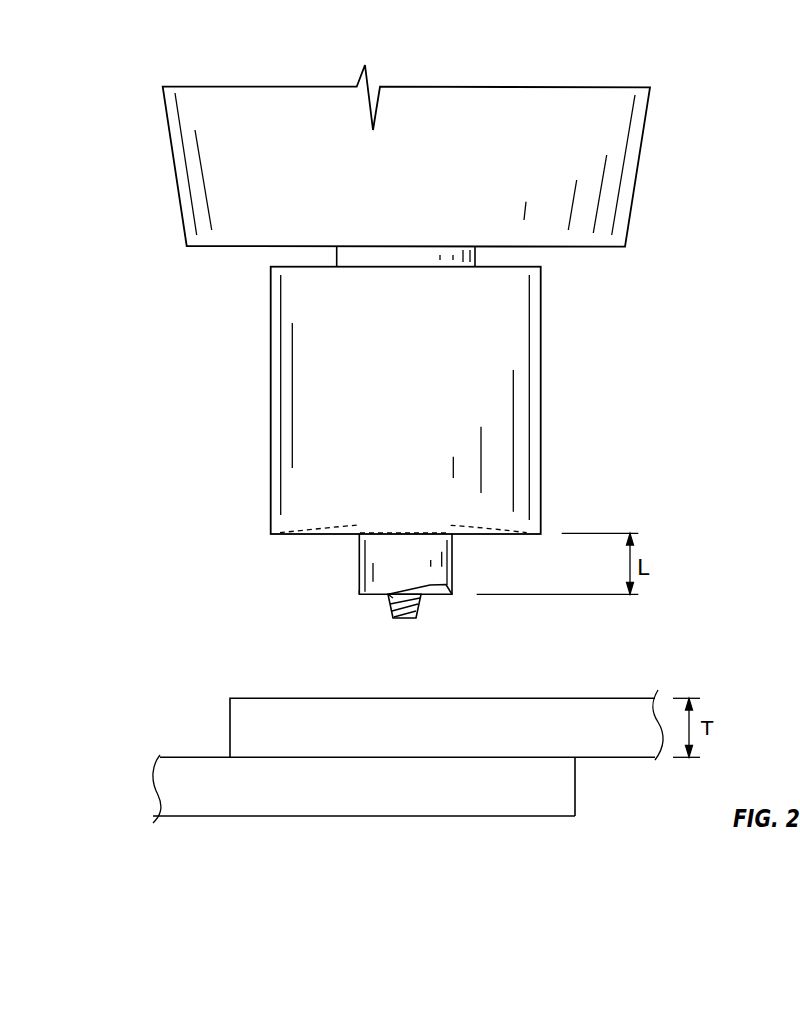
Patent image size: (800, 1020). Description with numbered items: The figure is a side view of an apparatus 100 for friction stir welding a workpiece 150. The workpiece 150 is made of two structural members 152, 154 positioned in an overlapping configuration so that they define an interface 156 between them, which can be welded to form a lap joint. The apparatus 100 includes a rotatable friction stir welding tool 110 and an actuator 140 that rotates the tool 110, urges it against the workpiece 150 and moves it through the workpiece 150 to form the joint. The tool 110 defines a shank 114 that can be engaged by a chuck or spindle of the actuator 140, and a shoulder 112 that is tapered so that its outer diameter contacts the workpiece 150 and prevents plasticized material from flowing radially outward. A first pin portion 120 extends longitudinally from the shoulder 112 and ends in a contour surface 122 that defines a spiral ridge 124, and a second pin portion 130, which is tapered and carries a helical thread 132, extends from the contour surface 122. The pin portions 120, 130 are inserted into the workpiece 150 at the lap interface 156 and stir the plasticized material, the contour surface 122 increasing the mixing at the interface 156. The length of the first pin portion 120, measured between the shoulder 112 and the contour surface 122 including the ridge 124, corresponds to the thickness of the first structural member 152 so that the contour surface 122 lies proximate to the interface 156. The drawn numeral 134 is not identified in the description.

The apparatus 100 is at (722, 202).
The friction stir welding tool 110 is at (541, 418).
The shoulder 112 is at (313, 533).
The shank 114 is at (475, 253).
The first pin portion 120 is at (359, 563).
The contour surface 122 is at (358, 596).
The ridge 124 is at (450, 595).
The second pin portion 130 is at (418, 613).
The helical thread 132 is at (388, 597).
The tip feature 134 is at (799, 442).
The actuator 140 is at (183, 218).
The workpiece 150 is at (178, 652).
The first structural member 152 is at (628, 760).
The structural member 154 is at (540, 818).
The interface 156 is at (312, 760).